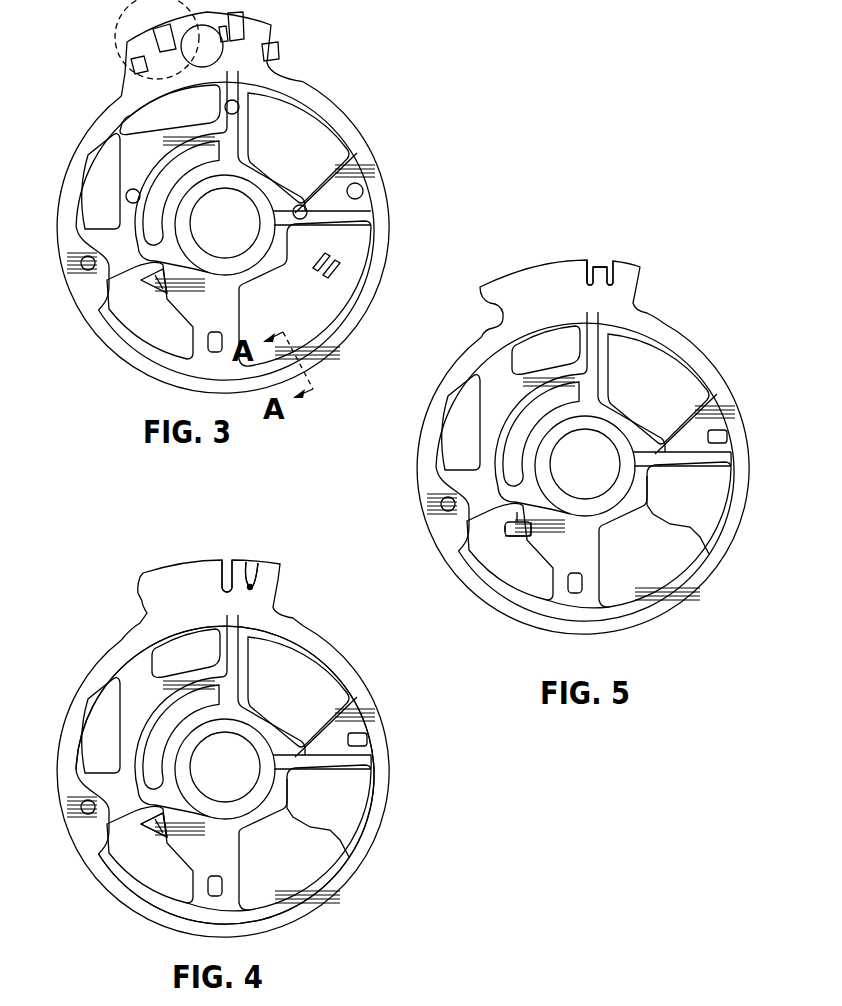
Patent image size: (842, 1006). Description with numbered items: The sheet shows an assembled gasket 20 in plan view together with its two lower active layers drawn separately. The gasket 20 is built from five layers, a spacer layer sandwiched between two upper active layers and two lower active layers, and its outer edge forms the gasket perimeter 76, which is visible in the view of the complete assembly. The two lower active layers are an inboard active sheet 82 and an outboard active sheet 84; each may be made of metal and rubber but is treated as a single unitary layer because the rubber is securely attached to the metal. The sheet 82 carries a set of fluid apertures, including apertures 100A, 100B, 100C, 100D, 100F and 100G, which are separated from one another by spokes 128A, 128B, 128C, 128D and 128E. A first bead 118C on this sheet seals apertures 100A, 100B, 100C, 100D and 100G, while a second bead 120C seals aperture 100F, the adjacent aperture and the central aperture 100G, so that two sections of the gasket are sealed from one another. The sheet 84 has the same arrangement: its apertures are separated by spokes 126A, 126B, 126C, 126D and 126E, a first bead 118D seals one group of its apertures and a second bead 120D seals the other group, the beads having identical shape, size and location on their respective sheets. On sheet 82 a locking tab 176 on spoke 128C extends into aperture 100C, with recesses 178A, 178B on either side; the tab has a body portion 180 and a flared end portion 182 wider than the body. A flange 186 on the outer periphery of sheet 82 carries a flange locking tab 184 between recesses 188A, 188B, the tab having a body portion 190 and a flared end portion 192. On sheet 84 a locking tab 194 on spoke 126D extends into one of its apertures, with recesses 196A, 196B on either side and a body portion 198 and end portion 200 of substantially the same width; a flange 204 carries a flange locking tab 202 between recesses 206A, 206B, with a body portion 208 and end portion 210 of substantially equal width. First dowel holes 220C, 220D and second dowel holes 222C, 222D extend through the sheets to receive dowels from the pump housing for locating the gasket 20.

In FIG. 3, the gasket 20 is at (223, 202).
In FIG. 3, the perimeter 76 is at (234, 231).
In FIG. 4, the inboard active sheet 82 is at (248, 782).
In FIG. 5, the outboard active sheet 84 is at (564, 479).
In FIG. 4, the aperture 100A is at (186, 611).
In FIG. 4, the aperture 100B is at (65, 725).
In FIG. 4, the aperture 100C is at (132, 864).
In FIG. 4, the aperture 100D is at (305, 837).
In FIG. 4, the aperture 100F is at (298, 692).
In FIG. 4, the aperture 100G is at (225, 767).
In FIG. 4, the first bead 118C is at (208, 775).
In FIG. 5, the first bead 118D is at (556, 472).
In FIG. 4, the second bead 120C is at (231, 770).
In FIG. 5, the second bead 120D is at (609, 404).
In FIG. 5, the spoke 126A is at (668, 422).
In FIG. 5, the spoke 126B is at (756, 423).
In FIG. 5, the spoke 126C is at (600, 592).
In FIG. 5, the spoke 126D is at (406, 496).
In FIG. 5, the spoke 126E is at (504, 345).
In FIG. 4, the spoke 128A is at (271, 685).
In FIG. 4, the spoke 128B is at (397, 748).
In FIG. 4, the spoke 128C is at (234, 890).
In FIG. 4, the spoke 128D is at (58, 823).
In FIG. 4, the spoke 128E is at (156, 709).
In FIG. 4, the locking tab 176 is at (186, 840).
In FIG. 4, the recess 178A is at (92, 846).
In FIG. 4, the recess 178B is at (139, 880).
In FIG. 4, the body portion 180 is at (193, 833).
In FIG. 4, the end portion 182 is at (112, 864).
In FIG. 4, the flange locking tab 184 is at (271, 551).
In FIG. 4, the flange 186 is at (207, 593).
In FIG. 4, the recess 188A is at (224, 546).
In FIG. 4, the recess 188B is at (293, 566).
In FIG. 4, the body portion 190 is at (284, 582).
In FIG. 4, the end portion 192 is at (245, 537).
In FIG. 5, the locking tab 194 is at (544, 535).
In FIG. 5, the recess 196A is at (440, 539).
In FIG. 5, the recess 196B is at (502, 584).
In FIG. 5, the body portion 198 is at (515, 504).
In FIG. 5, the end portion 200 is at (460, 557).
In FIG. 5, the flange locking tab 202 is at (626, 239).
In FIG. 5, the flange 204 is at (560, 290).
In FIG. 5, the recess 206A is at (576, 244).
In FIG. 5, the recess 206B is at (644, 258).
In FIG. 5, the body portion 208 is at (554, 256).
In FIG. 5, the end portion 210 is at (611, 224).
In FIG. 4, the first dowel hole 220C is at (169, 928).
In FIG. 5, the first dowel hole 220D is at (541, 625).
In FIG. 4, the second dowel hole 222C is at (411, 740).
In FIG. 5, the second dowel hole 222D is at (736, 391).